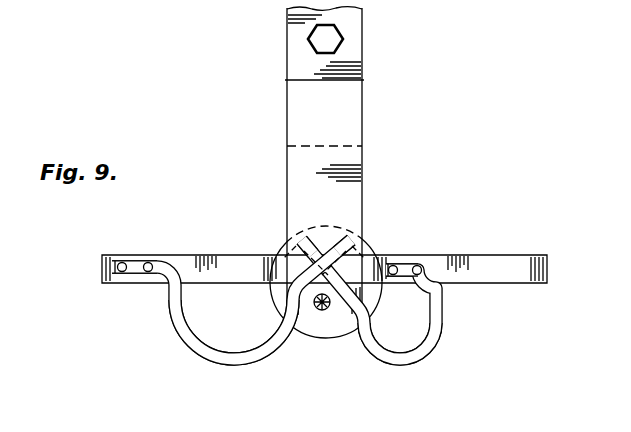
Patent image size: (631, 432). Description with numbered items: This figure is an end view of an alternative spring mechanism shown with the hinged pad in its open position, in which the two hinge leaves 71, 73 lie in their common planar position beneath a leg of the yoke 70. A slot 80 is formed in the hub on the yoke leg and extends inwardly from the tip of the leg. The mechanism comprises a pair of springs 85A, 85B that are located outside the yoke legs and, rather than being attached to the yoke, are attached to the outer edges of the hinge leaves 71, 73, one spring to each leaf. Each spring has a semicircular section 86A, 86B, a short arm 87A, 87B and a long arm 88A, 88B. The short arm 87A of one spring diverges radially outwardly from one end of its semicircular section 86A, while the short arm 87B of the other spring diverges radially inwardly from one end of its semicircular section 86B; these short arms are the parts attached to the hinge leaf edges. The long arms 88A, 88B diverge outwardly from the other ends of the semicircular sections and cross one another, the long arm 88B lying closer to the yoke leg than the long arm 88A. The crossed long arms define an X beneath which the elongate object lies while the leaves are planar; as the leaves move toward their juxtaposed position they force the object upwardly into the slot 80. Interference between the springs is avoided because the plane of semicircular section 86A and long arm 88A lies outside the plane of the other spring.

The yoke 70 is at (388, 84).
The hinge leaf 71 is at (100, 266).
The hinge leaf 73 is at (548, 268).
The slot 80 is at (321, 311).
The spring 85A is at (186, 343).
The spring 85B is at (443, 338).
The semicircular section 86A is at (237, 366).
The semicircular section 86B is at (392, 366).
The short arm 87A is at (142, 262).
The short arm 87B is at (410, 262).
The long arm 88A is at (340, 238).
The long arm 88B is at (310, 238).